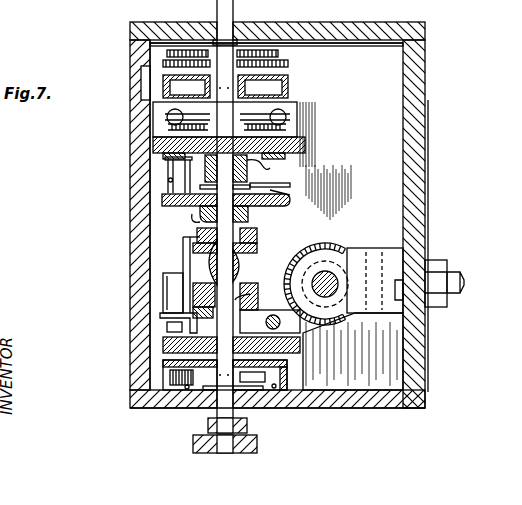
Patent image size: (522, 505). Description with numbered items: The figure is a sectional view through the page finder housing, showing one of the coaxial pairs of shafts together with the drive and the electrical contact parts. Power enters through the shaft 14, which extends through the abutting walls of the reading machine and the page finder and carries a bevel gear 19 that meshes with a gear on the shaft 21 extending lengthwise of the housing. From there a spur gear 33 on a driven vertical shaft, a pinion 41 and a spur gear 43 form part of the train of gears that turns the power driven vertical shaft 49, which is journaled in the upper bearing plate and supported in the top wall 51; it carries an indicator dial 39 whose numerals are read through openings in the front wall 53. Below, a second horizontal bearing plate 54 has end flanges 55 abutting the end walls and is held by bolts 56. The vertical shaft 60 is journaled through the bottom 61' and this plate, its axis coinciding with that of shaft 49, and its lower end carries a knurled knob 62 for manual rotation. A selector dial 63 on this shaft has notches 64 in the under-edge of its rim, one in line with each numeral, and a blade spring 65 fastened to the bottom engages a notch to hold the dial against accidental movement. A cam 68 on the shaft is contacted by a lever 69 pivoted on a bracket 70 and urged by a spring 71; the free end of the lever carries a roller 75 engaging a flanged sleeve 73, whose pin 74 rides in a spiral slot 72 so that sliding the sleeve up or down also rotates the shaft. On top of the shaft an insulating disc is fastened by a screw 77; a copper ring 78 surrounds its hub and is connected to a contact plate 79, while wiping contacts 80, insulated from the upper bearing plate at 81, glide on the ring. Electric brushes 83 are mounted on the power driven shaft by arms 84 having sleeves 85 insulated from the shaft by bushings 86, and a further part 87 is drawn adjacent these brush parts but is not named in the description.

The shaft 14 is at (454, 275).
The bevel gear 19 is at (365, 248).
The shaft 21 is at (328, 277).
The second spur gear 33 is at (290, 64).
The indicator dial 39 is at (290, 84).
The pinion 41 is at (285, 17).
The spur gear 43 is at (282, 51).
The vertical shaft 49 is at (222, 28).
The top wall 51 is at (267, 33).
The front wall 53 is at (177, 199).
The second horizontal bearing plate 54 is at (172, 345).
The end flanges 55 is at (302, 322).
The bolts 56 is at (303, 330).
The vertical shaft 60 is at (247, 430).
The bottom 61' is at (277, 418).
The knurled knob 62 is at (257, 444).
The selector dial 63 is at (167, 370).
The notches 64 is at (192, 388).
The blade spring 65 is at (136, 407).
The cam 68 is at (248, 287).
The lever 69 is at (200, 245).
The bracket 70 is at (170, 295).
The spring 71 is at (170, 277).
The spiral slot 72 is at (193, 258).
The sleeve 73 is at (258, 240).
The pin 74 is at (200, 224).
The roller 75 is at (192, 231).
The screw 77 is at (280, 188).
The copper ring 78 is at (200, 213).
The contact plate 79 is at (287, 200).
The wiping contacts 80 is at (165, 160).
The insulation 81 is at (163, 150).
The electric brushes 83 is at (293, 192).
The arms 84 is at (257, 162).
The sleeves 85 is at (200, 167).
The bushings 86 is at (190, 182).
The flange 87 is at (303, 147).